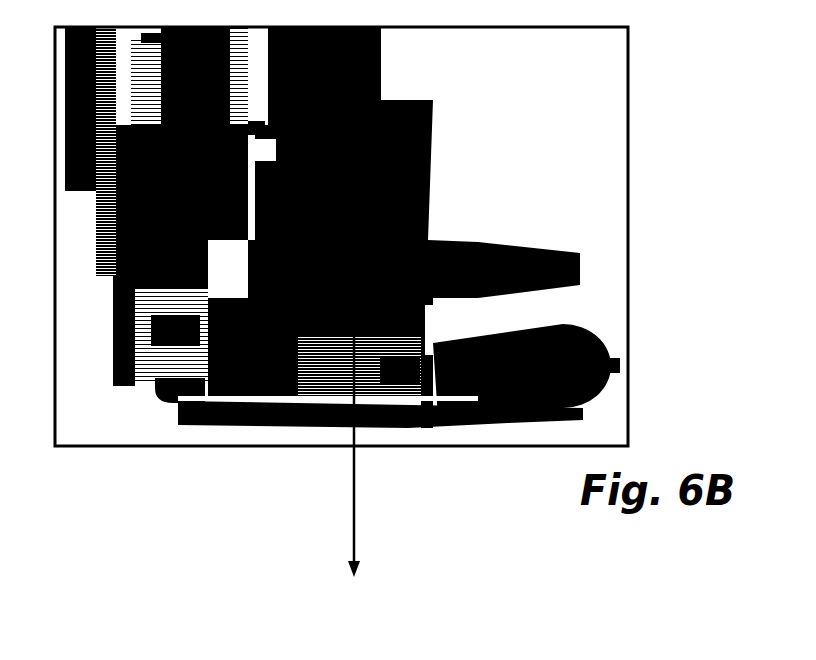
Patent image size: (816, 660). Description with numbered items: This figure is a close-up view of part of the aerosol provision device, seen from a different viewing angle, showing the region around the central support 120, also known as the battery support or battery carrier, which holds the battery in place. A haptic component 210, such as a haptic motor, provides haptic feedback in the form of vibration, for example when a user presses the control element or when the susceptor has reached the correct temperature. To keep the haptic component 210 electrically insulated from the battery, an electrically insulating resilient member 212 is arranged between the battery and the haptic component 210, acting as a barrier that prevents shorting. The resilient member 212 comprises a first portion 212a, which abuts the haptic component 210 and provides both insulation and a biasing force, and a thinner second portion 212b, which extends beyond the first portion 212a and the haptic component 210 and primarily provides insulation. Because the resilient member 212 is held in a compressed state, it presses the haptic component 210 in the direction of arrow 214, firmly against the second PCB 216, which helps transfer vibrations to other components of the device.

The central support 120 is at (407, 139).
The haptic component 210 is at (320, 352).
The electrically insulating resilient member 212 is at (363, 513).
The first portion 212a is at (375, 310).
The second portion 212b is at (438, 280).
The arrow 214 is at (346, 530).
The second PCB 216 is at (200, 400).